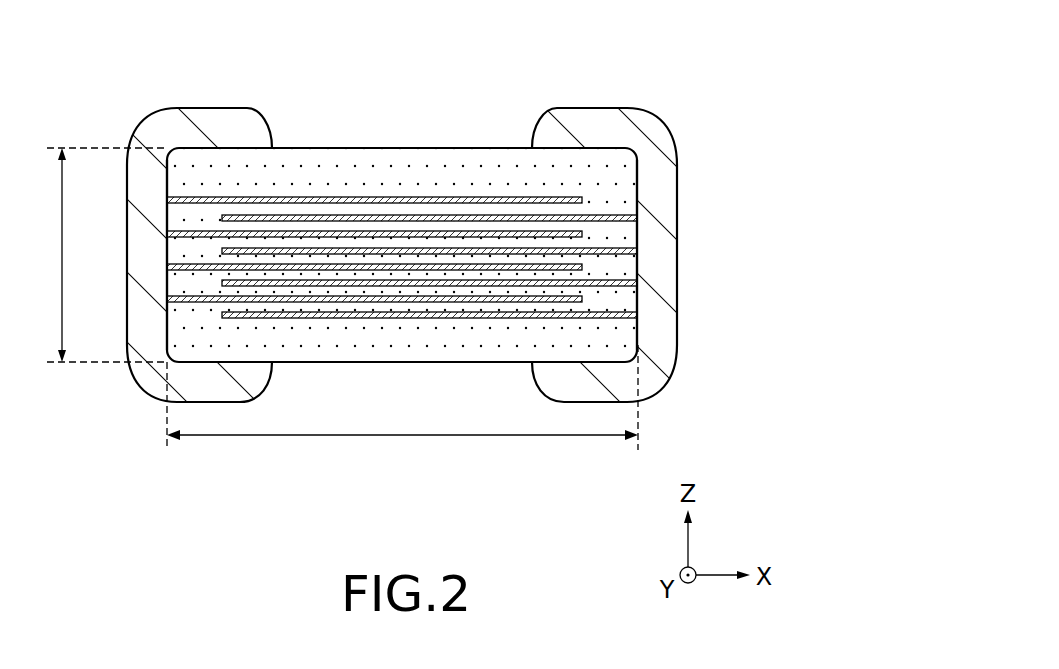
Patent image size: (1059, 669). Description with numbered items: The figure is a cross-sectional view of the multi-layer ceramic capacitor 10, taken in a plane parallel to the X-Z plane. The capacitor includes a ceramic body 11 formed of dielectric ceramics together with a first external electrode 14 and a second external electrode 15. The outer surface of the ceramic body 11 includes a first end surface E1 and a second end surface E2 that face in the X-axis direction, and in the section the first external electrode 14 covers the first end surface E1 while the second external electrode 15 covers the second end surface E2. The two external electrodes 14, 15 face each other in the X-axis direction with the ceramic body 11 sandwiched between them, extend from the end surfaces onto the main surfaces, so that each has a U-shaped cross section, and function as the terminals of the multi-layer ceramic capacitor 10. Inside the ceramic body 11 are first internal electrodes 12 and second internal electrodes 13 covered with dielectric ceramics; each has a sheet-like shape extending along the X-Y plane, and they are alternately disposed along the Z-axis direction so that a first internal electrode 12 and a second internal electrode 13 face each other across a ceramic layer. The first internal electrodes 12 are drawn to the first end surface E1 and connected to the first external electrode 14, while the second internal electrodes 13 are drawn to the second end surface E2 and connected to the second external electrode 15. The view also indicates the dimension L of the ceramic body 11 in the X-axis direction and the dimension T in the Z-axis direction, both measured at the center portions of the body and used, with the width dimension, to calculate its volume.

The multi-layer ceramic capacitor 10 is at (460, 213).
The ceramic body 11 is at (402, 189).
The first internal electrodes 12 is at (276, 296).
The second internal electrodes 13 is at (477, 312).
The first external electrode 14 is at (143, 237).
The second external electrode 15 is at (662, 234).
The first end surface E1 is at (166, 287).
The second end surface E2 is at (638, 276).
The dimension T is at (99, 255).
The dimension L is at (402, 408).